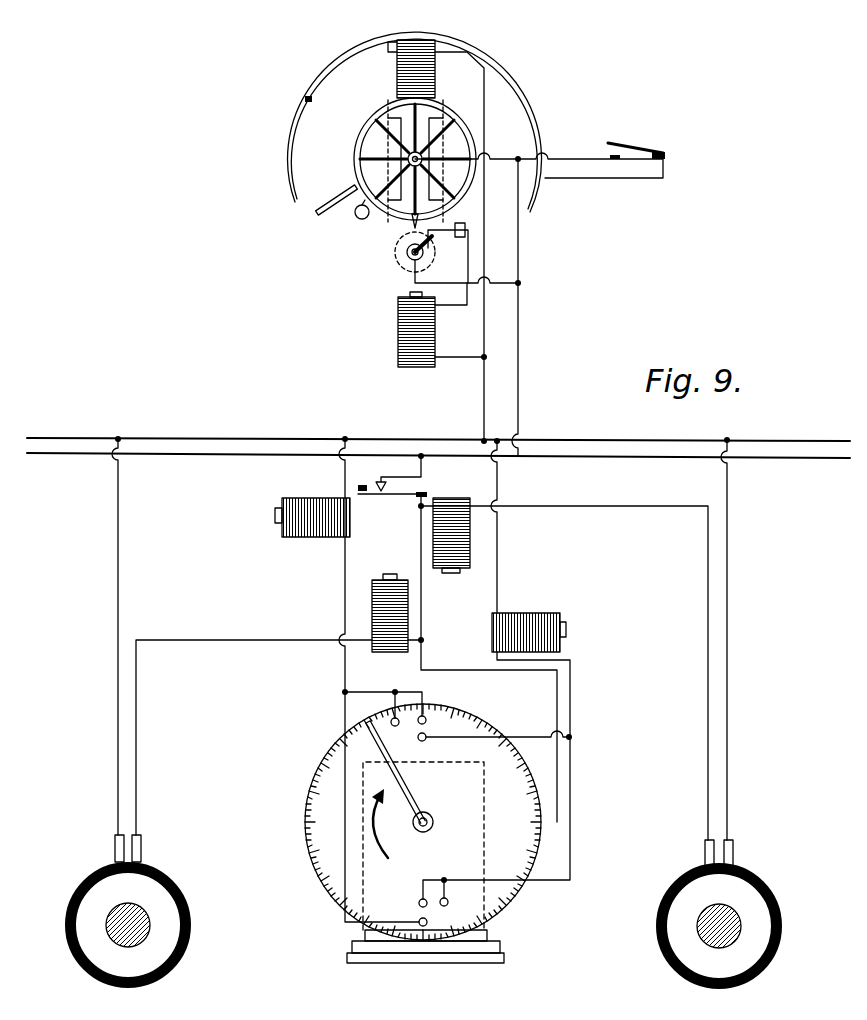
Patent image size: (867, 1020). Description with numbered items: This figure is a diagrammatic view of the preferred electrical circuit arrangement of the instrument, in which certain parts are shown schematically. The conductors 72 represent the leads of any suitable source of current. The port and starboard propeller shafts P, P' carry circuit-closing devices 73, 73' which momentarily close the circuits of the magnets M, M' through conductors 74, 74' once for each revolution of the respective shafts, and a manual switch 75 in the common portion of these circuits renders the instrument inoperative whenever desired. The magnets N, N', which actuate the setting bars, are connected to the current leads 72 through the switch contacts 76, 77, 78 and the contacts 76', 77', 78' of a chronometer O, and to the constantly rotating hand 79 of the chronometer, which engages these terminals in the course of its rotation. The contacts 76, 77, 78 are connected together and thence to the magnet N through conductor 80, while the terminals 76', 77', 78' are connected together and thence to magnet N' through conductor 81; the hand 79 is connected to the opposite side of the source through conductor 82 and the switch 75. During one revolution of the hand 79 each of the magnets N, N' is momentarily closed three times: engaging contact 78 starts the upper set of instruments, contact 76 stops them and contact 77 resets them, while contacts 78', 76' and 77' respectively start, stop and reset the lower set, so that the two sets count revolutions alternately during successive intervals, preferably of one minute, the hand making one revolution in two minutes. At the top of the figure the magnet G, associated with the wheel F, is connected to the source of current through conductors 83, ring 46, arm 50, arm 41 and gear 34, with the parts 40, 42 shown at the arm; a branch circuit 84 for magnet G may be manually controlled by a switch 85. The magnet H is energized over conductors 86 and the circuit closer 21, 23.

The ring 46 is at (347, 49).
The arm 50 is at (300, 104).
The wheel F is at (423, 154).
The magnet G is at (433, 84).
The gear 34 is at (468, 131).
The switch 85 is at (630, 148).
The branch circuit 84 is at (603, 180).
The conductors 83 is at (490, 331).
The arm 41 is at (343, 205).
The roller 42 is at (362, 219).
The pawl 40 is at (408, 224).
The circuit closer 21 is at (432, 256).
The circuit closer 23 is at (448, 222).
The magnet H is at (398, 330).
The conductors 86 is at (461, 320).
The conductors 72 is at (188, 445).
The manual switch 75 is at (383, 478).
The magnet N is at (312, 502).
The magnet M' is at (485, 535).
The conductor 80 is at (345, 567).
The magnet M is at (349, 613).
The magnet N' is at (528, 545).
The conductor 81 is at (571, 681).
The conductor 82 is at (557, 765).
The conductor 74 is at (90, 635).
The conductor 74' is at (600, 638).
The switch contact 77 is at (360, 707).
The switch contact 78 is at (440, 698).
The contact 76' is at (468, 714).
The contact 78' is at (408, 876).
The contact 77' is at (503, 916).
The switch contact 76 is at (409, 963).
The chronometer O is at (306, 818).
The hand 79 is at (399, 785).
The port propeller shaft P is at (148, 909).
The starboard propeller shaft P' is at (719, 912).
The circuit-closing device 73 is at (115, 991).
The circuit-closing device 73' is at (678, 986).